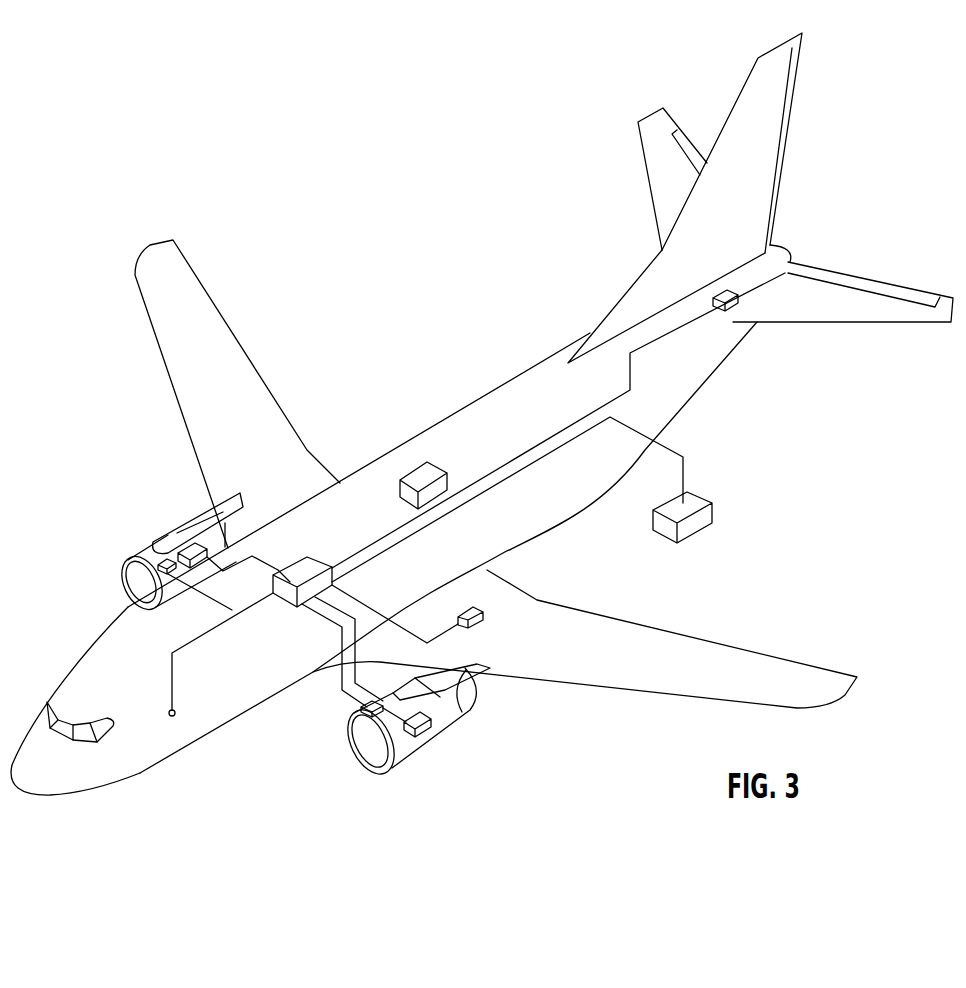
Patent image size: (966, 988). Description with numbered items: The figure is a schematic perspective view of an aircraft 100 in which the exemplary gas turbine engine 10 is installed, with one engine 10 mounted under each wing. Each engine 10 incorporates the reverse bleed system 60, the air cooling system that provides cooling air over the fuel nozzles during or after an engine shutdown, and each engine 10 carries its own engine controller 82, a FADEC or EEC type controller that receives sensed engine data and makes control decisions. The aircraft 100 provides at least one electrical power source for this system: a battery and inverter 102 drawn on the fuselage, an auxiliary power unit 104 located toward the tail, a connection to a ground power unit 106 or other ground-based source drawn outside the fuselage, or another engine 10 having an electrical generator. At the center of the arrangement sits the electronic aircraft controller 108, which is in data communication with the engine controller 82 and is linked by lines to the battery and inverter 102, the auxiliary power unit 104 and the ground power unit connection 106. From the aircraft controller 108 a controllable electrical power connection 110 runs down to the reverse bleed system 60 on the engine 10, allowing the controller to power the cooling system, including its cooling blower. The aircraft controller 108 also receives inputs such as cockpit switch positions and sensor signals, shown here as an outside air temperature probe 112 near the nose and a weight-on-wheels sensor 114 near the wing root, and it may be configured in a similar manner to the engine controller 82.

The aircraft 100 is at (414, 270).
The gas turbine engine 10 is at (88, 600).
The reverse bleed system 60 is at (157, 563).
The engine controller 82 is at (180, 548).
The battery and inverter 102 is at (423, 477).
The auxiliary power unit 104 is at (727, 309).
The connection to a ground power unit 106 is at (697, 507).
The electronic aircraft controller 108 is at (305, 565).
The controllable electrical power connection 110 is at (343, 672).
The outside air temperature probe 112 is at (175, 716).
The weight-on-wheels sensor 114 is at (476, 606).